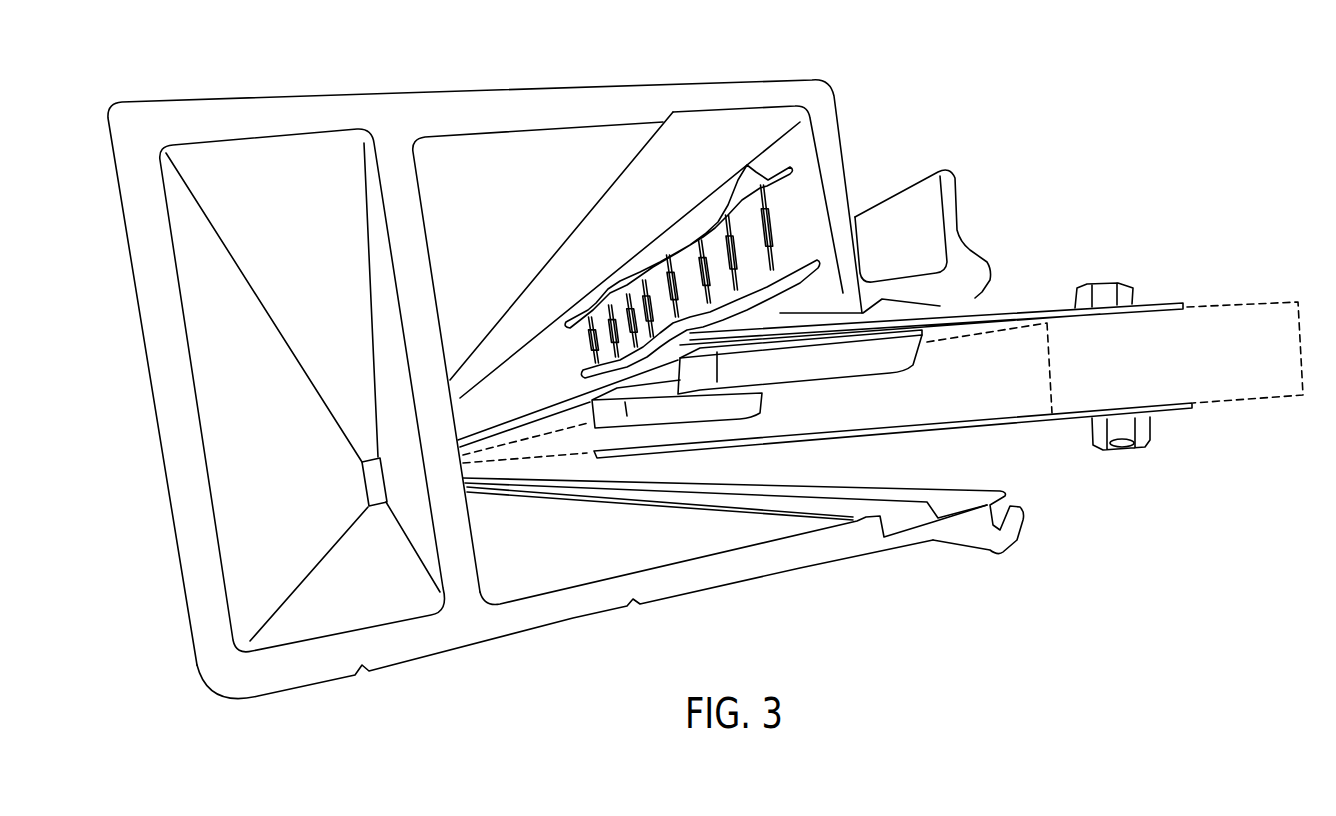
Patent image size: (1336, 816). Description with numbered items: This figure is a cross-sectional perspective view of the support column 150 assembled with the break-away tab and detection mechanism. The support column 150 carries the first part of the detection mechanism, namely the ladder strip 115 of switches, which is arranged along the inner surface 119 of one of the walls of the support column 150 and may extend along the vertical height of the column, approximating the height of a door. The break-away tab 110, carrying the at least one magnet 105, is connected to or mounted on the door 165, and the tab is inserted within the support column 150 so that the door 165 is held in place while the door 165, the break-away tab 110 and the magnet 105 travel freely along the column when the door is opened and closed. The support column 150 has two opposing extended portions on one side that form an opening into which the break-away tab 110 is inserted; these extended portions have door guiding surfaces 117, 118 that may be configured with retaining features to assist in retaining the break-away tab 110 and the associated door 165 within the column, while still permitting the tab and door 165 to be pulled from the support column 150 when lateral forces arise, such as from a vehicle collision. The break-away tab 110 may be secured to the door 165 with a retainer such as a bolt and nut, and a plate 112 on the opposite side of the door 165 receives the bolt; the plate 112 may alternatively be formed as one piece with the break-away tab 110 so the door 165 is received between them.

The magnet 105 is at (880, 355).
The break-away tab 110 is at (1152, 307).
The plate 112 is at (1073, 417).
The ladder strip 115 is at (747, 255).
The door guiding surface 117 is at (953, 487).
The door guiding surface 118 is at (952, 318).
The inner surface 119 is at (798, 137).
The support column 150 is at (247, 688).
The door 165 is at (1212, 395).